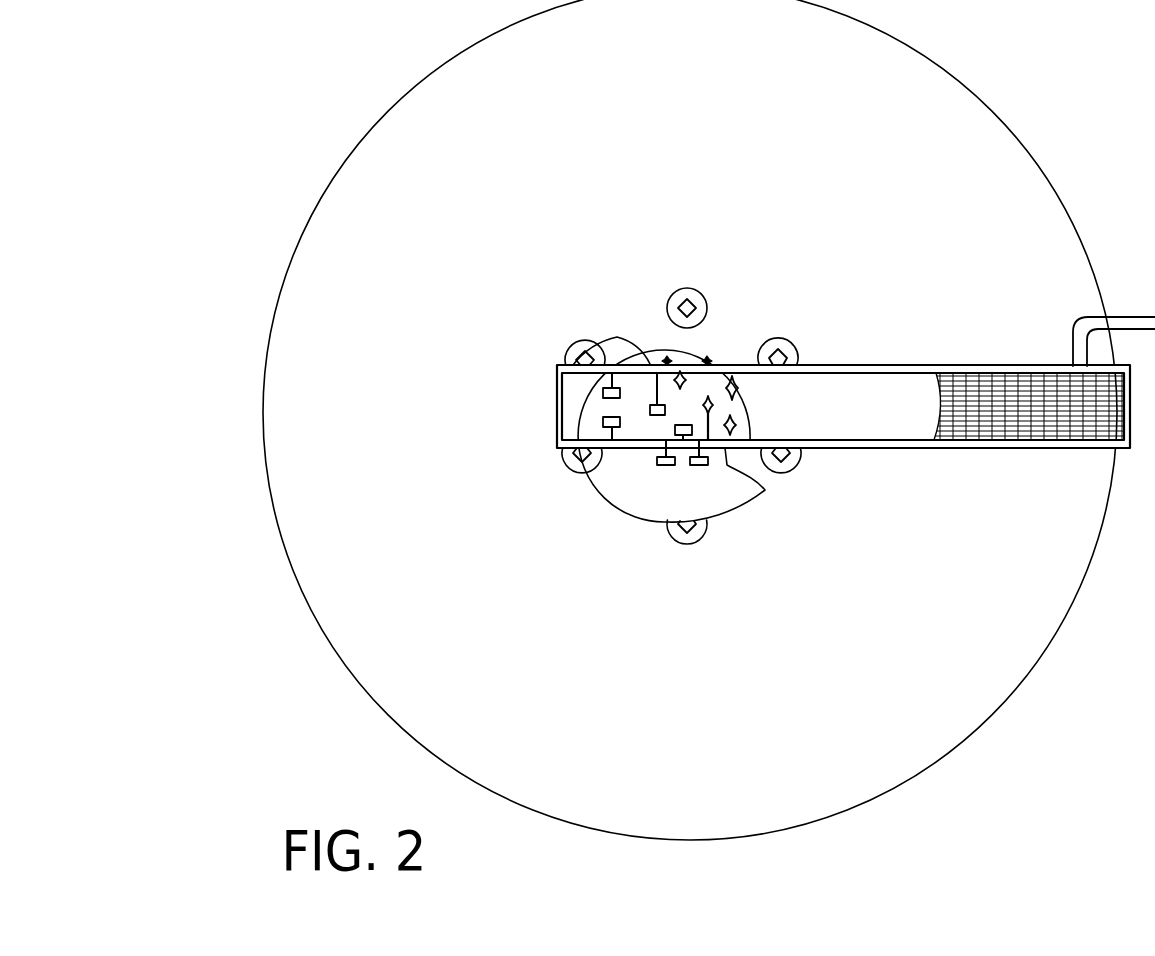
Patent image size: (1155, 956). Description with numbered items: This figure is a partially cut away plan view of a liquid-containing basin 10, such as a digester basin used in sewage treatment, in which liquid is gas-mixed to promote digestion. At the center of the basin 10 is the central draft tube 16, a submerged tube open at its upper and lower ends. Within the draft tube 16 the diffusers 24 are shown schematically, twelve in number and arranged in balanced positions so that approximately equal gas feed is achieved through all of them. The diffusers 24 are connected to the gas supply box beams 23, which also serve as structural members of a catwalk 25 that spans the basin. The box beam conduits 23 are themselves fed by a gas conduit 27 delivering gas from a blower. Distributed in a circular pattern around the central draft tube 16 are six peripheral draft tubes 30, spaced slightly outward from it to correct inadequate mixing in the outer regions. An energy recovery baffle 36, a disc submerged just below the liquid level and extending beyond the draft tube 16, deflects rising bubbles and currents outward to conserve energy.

The liquid-containing basin 10 is at (987, 66).
The central draft tube 16 is at (720, 357).
The box beams 23 is at (934, 372).
The air diffuser 24 is at (605, 423).
The catwalk 25 is at (848, 351).
The gas conduit 27 is at (1080, 322).
The peripheral draft tubes 30 is at (700, 290).
The energy recovery baffle 36 is at (702, 540).